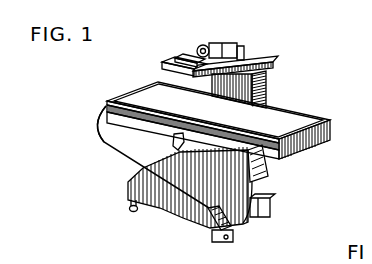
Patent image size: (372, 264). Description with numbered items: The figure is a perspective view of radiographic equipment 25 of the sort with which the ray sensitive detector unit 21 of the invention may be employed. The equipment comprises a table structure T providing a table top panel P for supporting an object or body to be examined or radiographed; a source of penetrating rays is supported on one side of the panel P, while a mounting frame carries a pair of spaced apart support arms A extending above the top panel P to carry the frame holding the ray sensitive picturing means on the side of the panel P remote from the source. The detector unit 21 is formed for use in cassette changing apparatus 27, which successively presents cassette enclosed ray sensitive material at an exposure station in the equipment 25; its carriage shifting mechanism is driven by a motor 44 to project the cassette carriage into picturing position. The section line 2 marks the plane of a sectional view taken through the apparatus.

The ray sensitive detector unit 21 is at (186, 52).
The cassette changing apparatus 27 is at (159, 65).
The motor 44 is at (205, 46).
The support arms A is at (276, 58).
The table top panel P is at (333, 117).
The table structure T is at (316, 162).
The radiographic equipment 25 is at (101, 100).
The section line 2- 2 is at (284, 84).